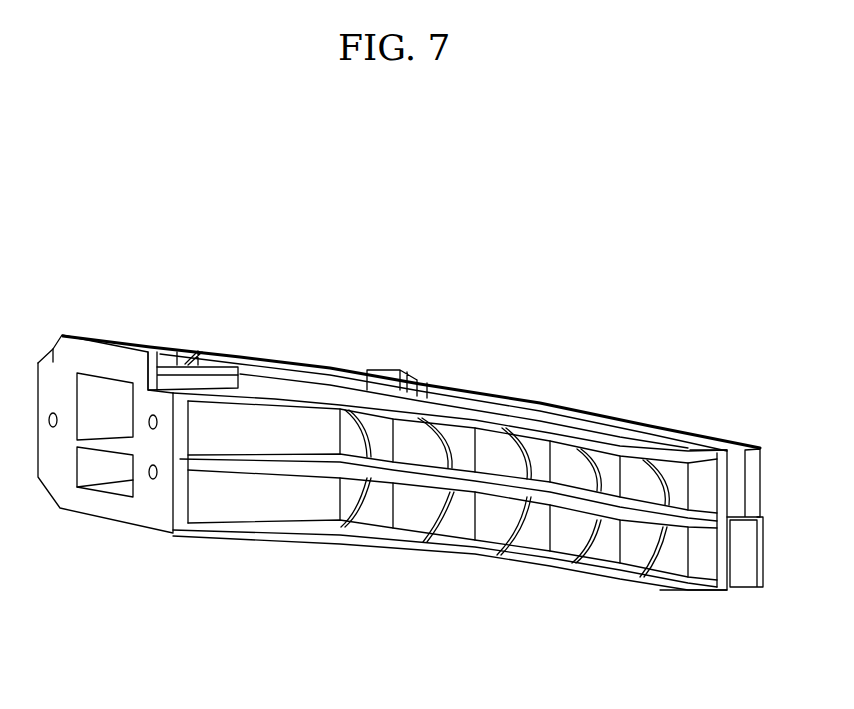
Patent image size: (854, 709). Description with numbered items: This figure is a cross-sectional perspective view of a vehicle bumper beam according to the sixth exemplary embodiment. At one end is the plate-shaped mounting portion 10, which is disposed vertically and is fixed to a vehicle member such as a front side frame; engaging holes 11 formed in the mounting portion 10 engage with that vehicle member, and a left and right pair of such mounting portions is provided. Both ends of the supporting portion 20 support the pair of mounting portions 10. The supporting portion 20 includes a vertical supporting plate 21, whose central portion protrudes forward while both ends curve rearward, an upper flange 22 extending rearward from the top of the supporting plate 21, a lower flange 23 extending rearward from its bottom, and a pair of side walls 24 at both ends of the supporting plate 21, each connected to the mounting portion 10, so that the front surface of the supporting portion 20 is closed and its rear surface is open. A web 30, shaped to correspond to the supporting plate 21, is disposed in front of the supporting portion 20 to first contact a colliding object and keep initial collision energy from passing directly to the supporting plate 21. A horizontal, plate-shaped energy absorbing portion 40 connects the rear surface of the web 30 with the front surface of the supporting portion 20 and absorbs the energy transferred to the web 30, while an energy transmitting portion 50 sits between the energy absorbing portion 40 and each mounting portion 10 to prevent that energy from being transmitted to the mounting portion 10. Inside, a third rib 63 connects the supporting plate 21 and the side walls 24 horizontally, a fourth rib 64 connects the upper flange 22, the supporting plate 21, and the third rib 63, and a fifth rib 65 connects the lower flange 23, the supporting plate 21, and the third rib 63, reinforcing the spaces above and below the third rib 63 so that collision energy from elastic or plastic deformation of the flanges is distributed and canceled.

The mounting portion 10 is at (148, 508).
The engaging holes 11 is at (53, 428).
The supporting portion 20 is at (442, 667).
The supporting plate 21 is at (500, 522).
The upper flange 22 is at (403, 410).
The lower flange 23 is at (545, 567).
The side walls 24 is at (282, 508).
The web 30 is at (760, 597).
The energy absorbing portion 40 is at (737, 503).
The energy transmitting portion 50 is at (166, 368).
The third rib 63 is at (630, 508).
The fourth rib 64 is at (458, 443).
The fifth rib 65 is at (602, 548).